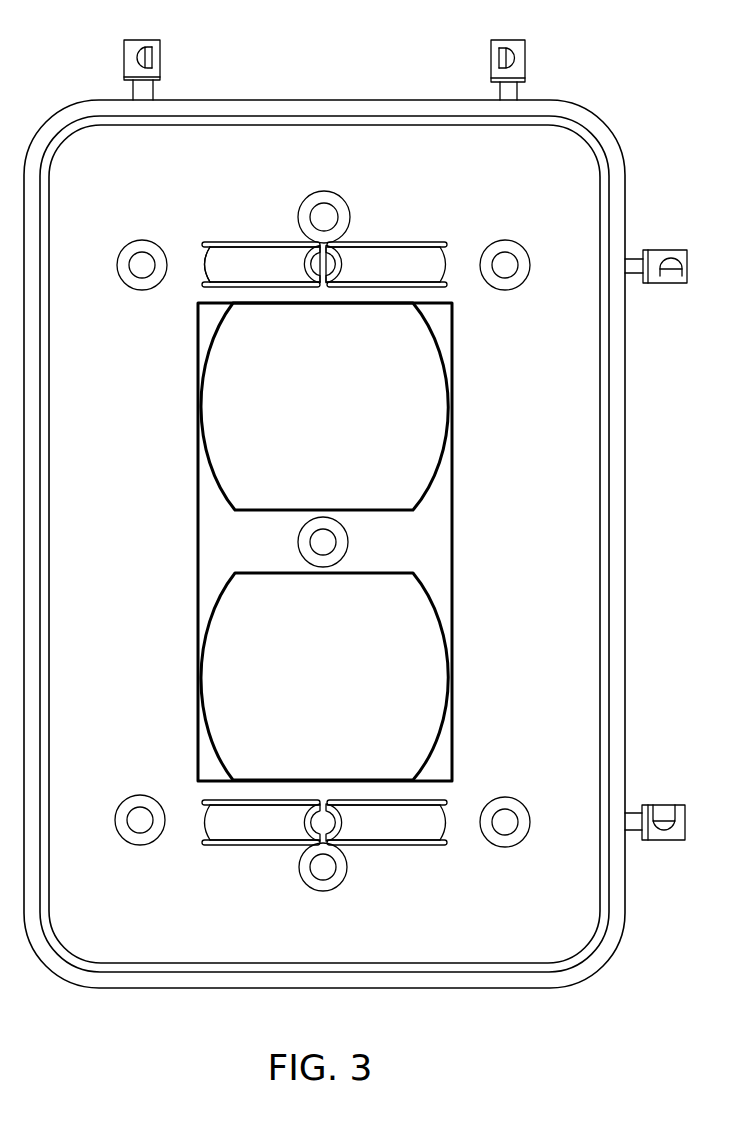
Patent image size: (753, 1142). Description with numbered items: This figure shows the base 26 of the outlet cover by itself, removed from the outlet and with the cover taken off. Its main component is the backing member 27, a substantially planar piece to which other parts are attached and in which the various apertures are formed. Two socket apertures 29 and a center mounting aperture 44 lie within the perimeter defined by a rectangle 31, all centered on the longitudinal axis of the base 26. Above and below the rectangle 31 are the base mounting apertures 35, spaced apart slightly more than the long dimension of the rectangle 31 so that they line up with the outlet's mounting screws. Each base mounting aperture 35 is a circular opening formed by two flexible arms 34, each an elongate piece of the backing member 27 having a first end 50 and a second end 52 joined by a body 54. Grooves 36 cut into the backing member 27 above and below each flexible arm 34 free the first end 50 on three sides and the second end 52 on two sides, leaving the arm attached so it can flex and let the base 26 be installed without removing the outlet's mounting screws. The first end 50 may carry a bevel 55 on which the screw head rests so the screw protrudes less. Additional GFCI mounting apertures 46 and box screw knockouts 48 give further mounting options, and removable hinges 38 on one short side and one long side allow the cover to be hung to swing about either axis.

The base 26 is at (405, 86).
The backing member 27 is at (123, 464).
The socket apertures 29 is at (330, 672).
The rectangle 31 is at (453, 536).
The flexible arm 34 is at (418, 257).
The base mounting aperture 35 is at (318, 258).
The groove 36 is at (222, 246).
The hinges 38 is at (672, 284).
The center mounting aperture 44 is at (322, 540).
The GFCI mounting apertures 46 is at (320, 868).
The box screw knockouts 48 is at (505, 822).
The first end 50 is at (312, 262).
The second end 52 is at (201, 266).
The body 54 is at (281, 254).
The bevel 55 is at (340, 262).